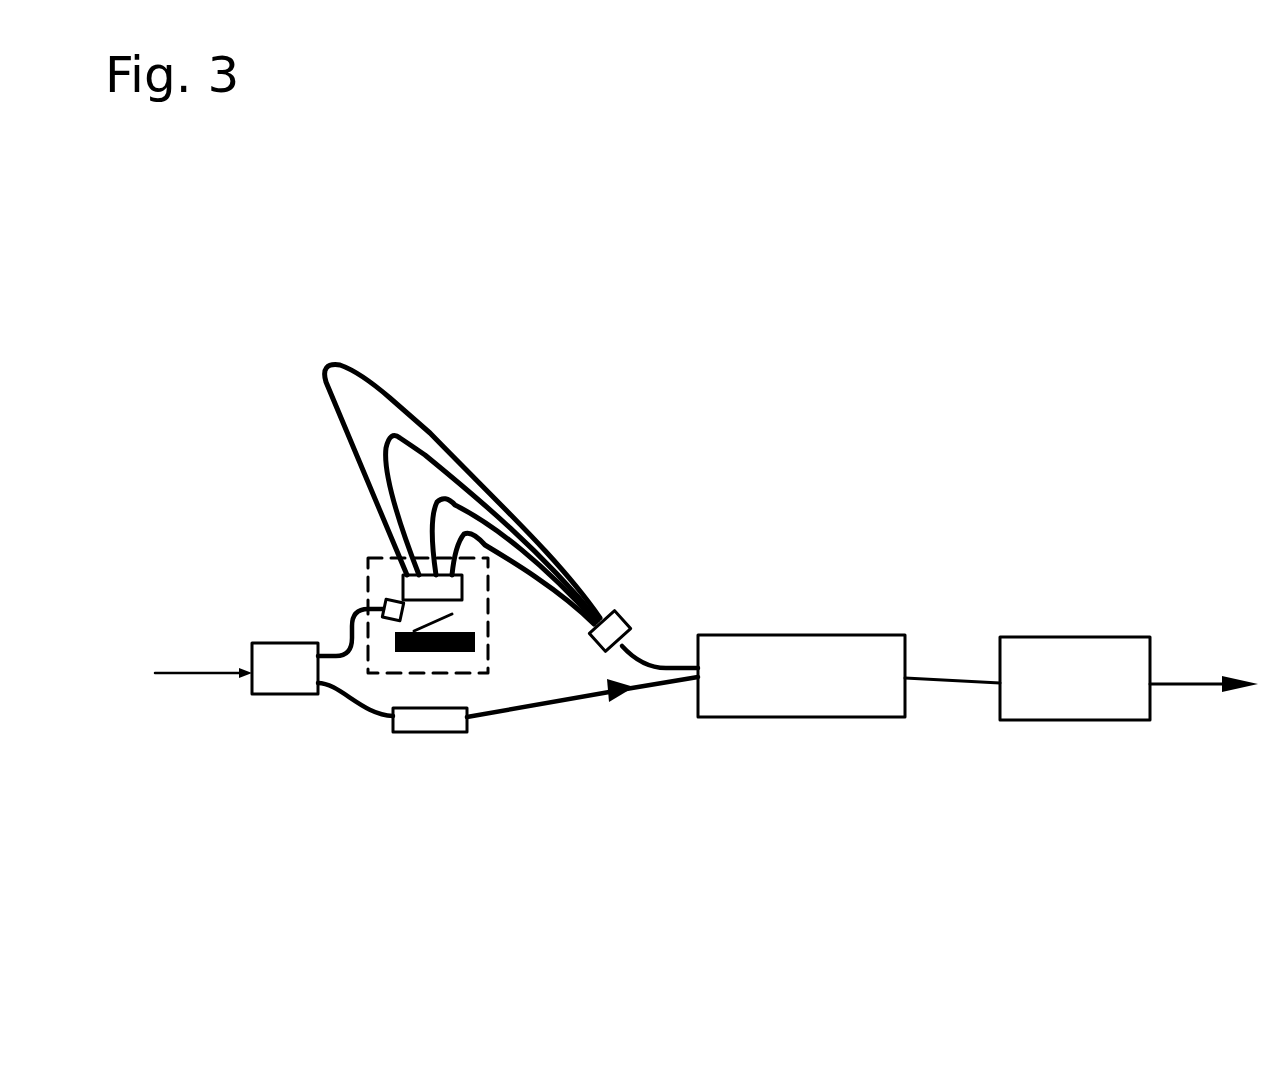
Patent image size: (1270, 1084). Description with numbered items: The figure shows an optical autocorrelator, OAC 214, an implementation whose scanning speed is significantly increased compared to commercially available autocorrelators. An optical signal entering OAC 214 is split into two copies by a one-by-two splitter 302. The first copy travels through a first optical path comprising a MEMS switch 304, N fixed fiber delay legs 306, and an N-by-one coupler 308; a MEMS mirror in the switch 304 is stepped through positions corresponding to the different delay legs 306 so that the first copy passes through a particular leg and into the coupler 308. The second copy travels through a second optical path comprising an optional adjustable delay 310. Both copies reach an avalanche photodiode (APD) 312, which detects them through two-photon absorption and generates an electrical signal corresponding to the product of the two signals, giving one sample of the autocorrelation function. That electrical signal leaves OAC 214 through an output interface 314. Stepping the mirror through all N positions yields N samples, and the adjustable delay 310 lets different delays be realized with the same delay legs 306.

The optical autocorrelator (OAC) 214 is at (216, 930).
The 1×2 splitter 302 is at (266, 641).
The MEMS switch 304 is at (367, 560).
The fixed fiber delay legs 306 is at (452, 455).
The N×1 coupler 308 is at (618, 620).
The adjustable delay 310 is at (430, 723).
The avalanche photodiode (APD) 312 is at (820, 638).
The output interface 314 is at (1105, 645).